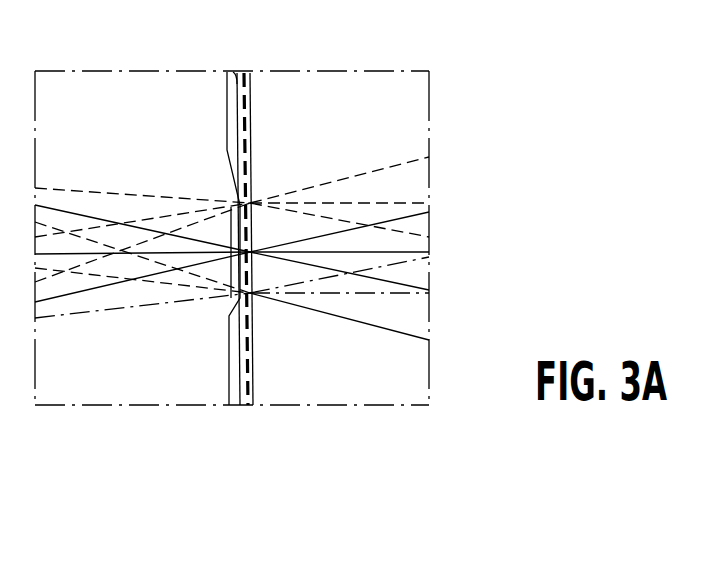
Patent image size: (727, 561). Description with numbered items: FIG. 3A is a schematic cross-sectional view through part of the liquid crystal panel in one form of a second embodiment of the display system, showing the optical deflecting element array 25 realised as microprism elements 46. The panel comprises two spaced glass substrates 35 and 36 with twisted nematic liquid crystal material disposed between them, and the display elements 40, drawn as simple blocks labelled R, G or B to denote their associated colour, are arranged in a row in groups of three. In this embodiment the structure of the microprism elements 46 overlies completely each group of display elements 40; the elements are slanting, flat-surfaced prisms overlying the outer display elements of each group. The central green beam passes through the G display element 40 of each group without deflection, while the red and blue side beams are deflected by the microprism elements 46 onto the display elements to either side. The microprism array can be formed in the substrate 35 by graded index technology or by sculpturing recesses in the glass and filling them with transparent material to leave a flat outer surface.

The optical deflecting element array 25 is at (230, 426).
The glass substrate 35 is at (68, 84).
The glass substrate 36 is at (395, 82).
The display elements 40 is at (253, 140).
The microprism elements 46 is at (231, 207).